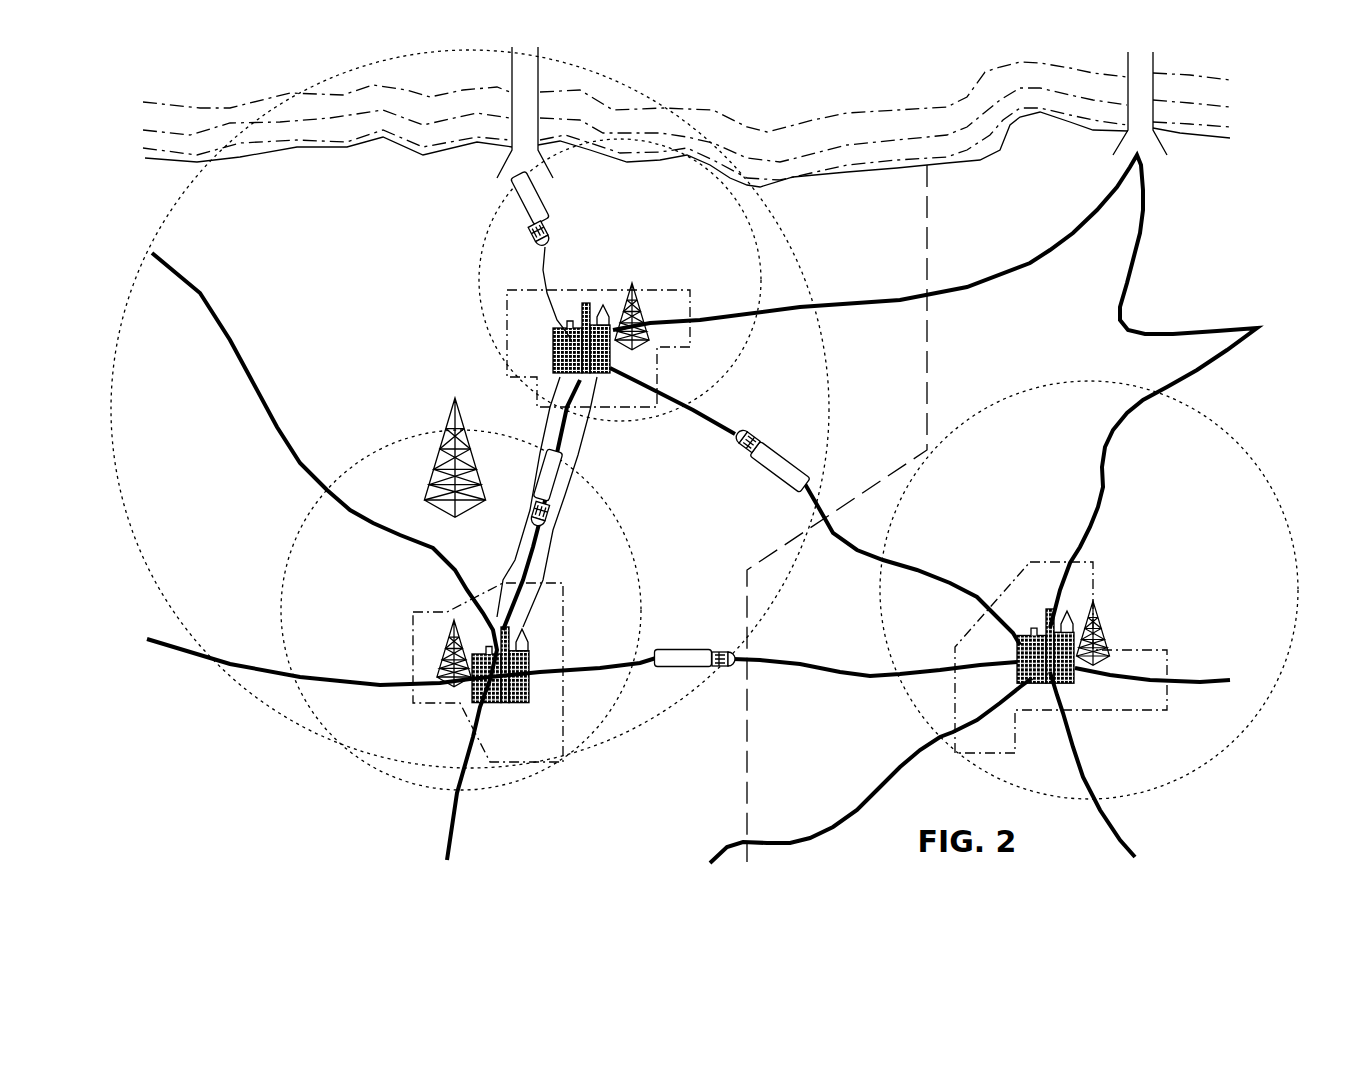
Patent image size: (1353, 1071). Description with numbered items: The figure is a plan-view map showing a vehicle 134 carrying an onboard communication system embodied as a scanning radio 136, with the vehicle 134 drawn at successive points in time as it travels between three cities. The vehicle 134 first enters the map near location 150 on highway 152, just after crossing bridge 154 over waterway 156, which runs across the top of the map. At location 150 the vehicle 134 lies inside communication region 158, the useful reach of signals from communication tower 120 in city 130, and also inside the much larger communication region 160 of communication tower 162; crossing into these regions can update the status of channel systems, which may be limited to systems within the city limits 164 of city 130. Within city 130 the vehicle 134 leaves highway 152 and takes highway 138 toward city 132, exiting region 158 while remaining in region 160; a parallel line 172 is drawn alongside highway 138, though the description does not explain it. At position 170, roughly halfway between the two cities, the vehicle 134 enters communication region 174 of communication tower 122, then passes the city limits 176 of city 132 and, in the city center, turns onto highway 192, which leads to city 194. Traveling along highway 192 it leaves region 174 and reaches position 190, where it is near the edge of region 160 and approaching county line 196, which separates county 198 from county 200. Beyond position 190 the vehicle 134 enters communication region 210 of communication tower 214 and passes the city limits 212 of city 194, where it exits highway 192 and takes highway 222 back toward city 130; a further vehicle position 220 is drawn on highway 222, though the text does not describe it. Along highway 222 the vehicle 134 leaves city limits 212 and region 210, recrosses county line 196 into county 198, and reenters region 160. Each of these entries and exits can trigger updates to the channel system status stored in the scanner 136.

The communication tower 120 is at (633, 307).
The communication tower 122 is at (447, 653).
The city 130 is at (553, 347).
The city 132 is at (470, 690).
The vehicle 134 is at (524, 216).
The scanning radio 136 is at (547, 235).
The highway 138 is at (533, 555).
The location 150 is at (533, 193).
The highway 152 is at (547, 273).
The bridge 154 is at (540, 72).
The waterway 156 is at (757, 113).
The communication region 158 is at (480, 277).
The communication region 160 is at (797, 257).
The communication tower 162 is at (433, 423).
The city limits 164 is at (700, 330).
The position 170 is at (563, 477).
The path 172 is at (550, 430).
The communication region 174 is at (292, 558).
The city limits 176 is at (565, 625).
The position 190 is at (690, 668).
The highway 192 is at (840, 667).
The city 194 is at (1013, 647).
The county line 196 is at (745, 750).
The county 198 is at (665, 818).
The county 200 is at (837, 814).
The communication region 210 is at (1217, 427).
The city limits 212 is at (1040, 562).
The communication tower 214 is at (1100, 618).
The mobile unit 220 is at (780, 473).
The highway 222 is at (712, 430).